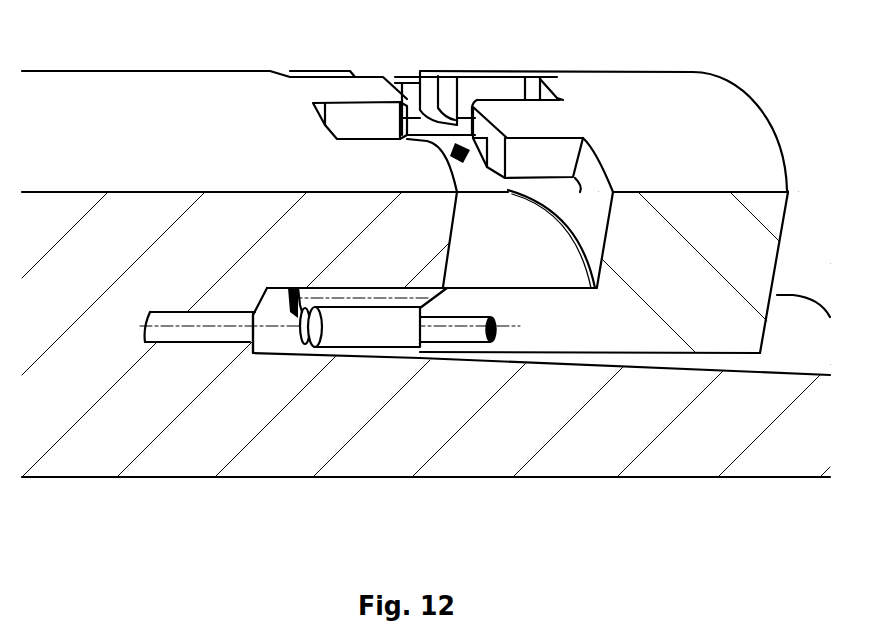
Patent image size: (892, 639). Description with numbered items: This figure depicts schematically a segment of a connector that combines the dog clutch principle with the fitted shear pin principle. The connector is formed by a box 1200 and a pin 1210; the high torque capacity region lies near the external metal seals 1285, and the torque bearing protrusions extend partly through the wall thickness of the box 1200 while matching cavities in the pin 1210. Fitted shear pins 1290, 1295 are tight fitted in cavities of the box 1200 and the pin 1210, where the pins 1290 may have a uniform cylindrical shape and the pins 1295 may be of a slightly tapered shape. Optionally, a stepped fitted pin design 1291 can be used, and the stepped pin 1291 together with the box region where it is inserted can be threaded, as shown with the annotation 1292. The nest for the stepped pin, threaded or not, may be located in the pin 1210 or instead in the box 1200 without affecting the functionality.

The pin 1210 is at (108, 123).
The box 1200 is at (640, 102).
The pin 1290 is at (195, 529).
The pin 1295 is at (312, 343).
The external metal seals 1285 is at (372, 358).
The stepped fitted pin 1291 is at (450, 332).
The threaded annotation 1292 is at (473, 338).